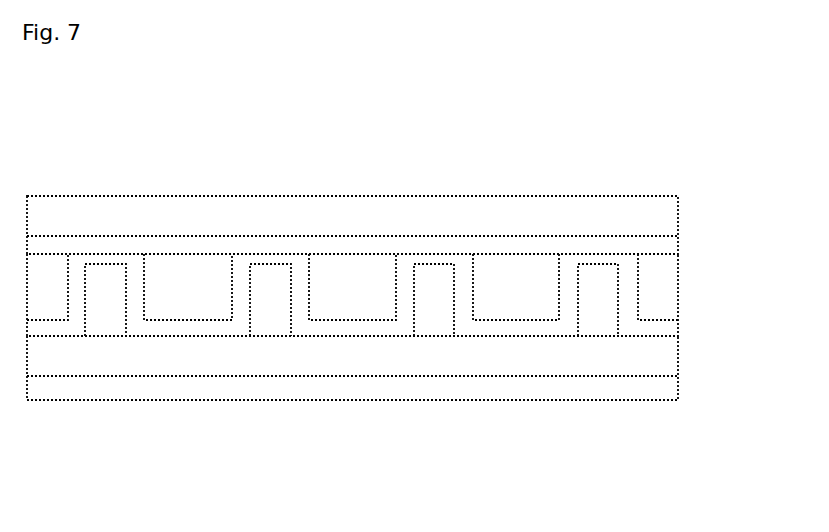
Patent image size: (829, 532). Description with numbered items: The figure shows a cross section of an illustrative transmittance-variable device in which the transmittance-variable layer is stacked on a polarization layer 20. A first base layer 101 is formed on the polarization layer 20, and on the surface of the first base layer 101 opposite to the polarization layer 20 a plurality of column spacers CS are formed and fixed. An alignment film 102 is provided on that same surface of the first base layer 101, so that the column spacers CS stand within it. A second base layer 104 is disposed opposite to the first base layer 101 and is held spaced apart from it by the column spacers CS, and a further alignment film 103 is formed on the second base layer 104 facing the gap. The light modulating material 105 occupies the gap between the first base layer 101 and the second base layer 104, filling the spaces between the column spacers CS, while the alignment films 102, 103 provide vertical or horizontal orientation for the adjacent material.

The polarization layer 20 is at (230, 391).
The first base layer 101 is at (625, 364).
The alignment film 102 is at (412, 207).
The alignment film 103 is at (643, 247).
The second base layer 104 is at (613, 207).
The light modulating material 105 is at (360, 273).
The column spacer CS is at (270, 288).